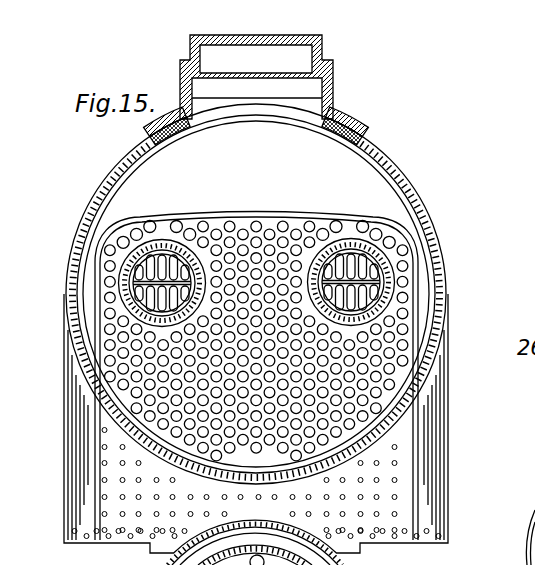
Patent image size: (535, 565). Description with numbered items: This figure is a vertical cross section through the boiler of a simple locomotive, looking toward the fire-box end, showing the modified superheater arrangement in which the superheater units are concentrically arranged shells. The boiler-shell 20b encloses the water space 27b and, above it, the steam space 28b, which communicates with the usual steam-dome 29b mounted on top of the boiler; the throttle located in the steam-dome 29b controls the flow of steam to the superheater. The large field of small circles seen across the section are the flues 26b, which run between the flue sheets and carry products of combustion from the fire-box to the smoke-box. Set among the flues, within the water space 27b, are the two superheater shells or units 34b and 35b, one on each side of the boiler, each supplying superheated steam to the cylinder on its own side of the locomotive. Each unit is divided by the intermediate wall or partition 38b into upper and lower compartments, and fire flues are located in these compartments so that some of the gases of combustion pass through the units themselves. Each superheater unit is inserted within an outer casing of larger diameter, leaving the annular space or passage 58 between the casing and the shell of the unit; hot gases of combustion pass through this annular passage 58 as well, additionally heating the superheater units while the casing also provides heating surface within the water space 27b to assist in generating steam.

The boiler-shell 20b is at (102, 190).
The flues 26b is at (283, 225).
The water space 27b is at (256, 294).
The steam space 28b is at (256, 130).
The steam-dome 29b is at (334, 91).
The superheater shell or unit 34b is at (158, 246).
The superheater shell or unit 35b is at (351, 245).
The intermediate wall or partition 38b is at (394, 286).
The annular space or passage 58 is at (375, 246).